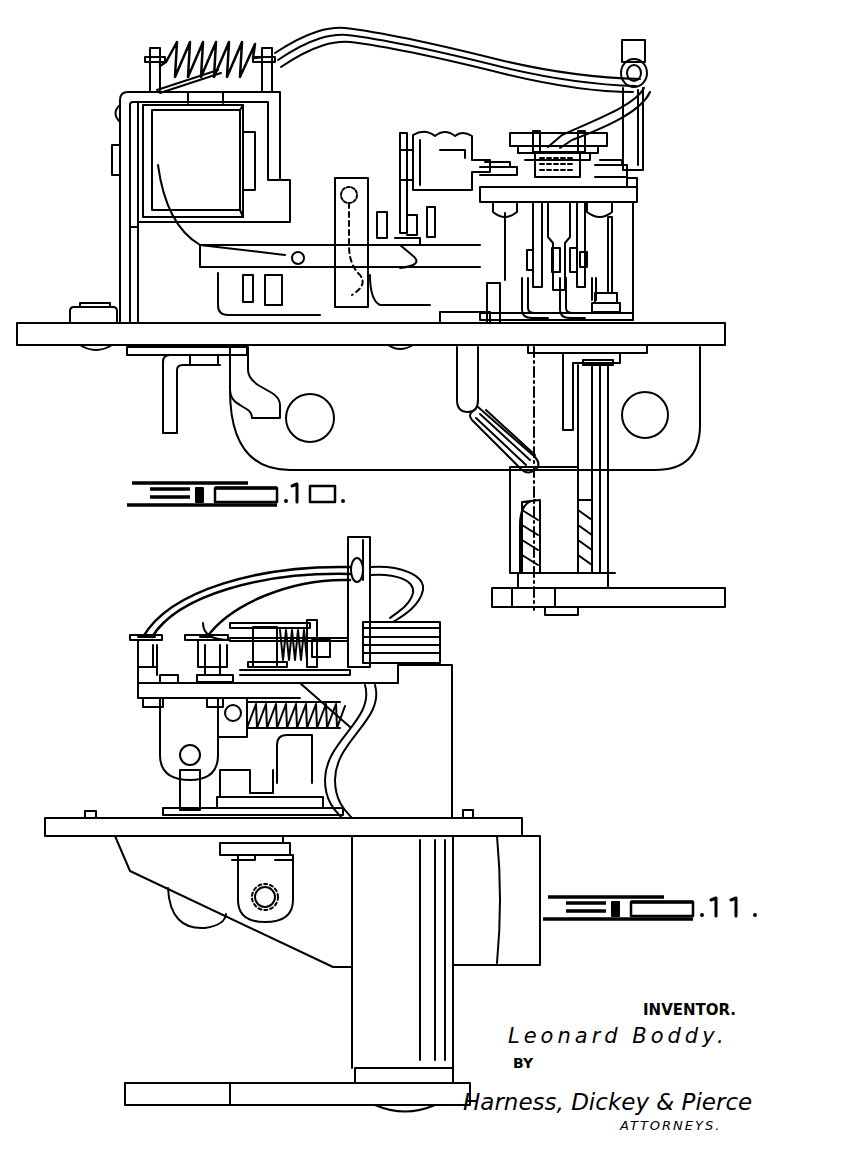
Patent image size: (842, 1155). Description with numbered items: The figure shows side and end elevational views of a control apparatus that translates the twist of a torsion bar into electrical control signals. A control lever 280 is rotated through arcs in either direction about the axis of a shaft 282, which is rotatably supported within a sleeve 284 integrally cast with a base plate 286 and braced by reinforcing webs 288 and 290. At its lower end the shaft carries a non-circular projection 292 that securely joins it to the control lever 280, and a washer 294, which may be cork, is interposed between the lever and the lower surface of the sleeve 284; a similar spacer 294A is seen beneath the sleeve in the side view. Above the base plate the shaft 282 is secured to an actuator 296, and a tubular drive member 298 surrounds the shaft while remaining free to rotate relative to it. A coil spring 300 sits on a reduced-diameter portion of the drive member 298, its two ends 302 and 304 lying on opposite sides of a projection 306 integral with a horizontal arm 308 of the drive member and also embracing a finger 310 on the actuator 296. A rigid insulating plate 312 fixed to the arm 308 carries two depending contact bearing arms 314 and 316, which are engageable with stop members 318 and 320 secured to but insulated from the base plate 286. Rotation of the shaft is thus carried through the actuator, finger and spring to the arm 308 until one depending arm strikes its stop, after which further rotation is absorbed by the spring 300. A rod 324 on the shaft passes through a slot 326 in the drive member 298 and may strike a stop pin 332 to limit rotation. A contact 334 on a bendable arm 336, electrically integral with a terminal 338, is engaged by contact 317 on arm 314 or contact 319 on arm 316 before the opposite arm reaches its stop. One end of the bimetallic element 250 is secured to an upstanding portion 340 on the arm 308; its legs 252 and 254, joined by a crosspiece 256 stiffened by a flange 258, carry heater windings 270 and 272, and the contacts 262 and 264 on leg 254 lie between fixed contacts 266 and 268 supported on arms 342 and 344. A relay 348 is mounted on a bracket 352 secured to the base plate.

In FIG. 10, the relay / bimetallic element 250 is at (400, 178).
In FIG. 11, the relay / bimetallic element 250 is at (320, 745).
In FIG. 10, the leg portion 252 is at (404, 133).
In FIG. 11, the leg portion 252 is at (275, 640).
In FIG. 10, the leg portion 254 is at (400, 250).
In FIG. 11, the leg portion 254 is at (345, 722).
In FIG. 10, the crosspiece 256 is at (400, 188).
In FIG. 10, the flange 258 is at (410, 198).
In FIG. 10, the contact 262 is at (425, 240).
In FIG. 10, the contact 264 is at (385, 222).
In FIG. 10, the electrical contact 266 is at (420, 222).
In FIG. 10, the electrical contact 268 is at (395, 215).
In FIG. 11, the winding 270 is at (285, 635).
In FIG. 11, the heater winding 272 is at (275, 778).
In FIG. 10, the control lever 280 is at (685, 598).
In FIG. 11, the control lever 280 is at (205, 1090).
In FIG. 10, the shaft 282 is at (565, 530).
In FIG. 10, the sleeve 284 is at (595, 492).
In FIG. 11, the sleeve 284 is at (370, 990).
In FIG. 10, the base plate 286 is at (712, 325).
In FIG. 11, the base plate 286 is at (505, 818).
In FIG. 10, the reinforcing web 288 is at (525, 388).
In FIG. 11, the reinforcing web 290 is at (497, 970).
In FIG. 10, the non-circular projection 292 is at (565, 617).
In FIG. 11, the washer 294 is at (365, 1077).
In FIG. 10, the spacer block 294A is at (600, 578).
In FIG. 10, the actuator 296 is at (607, 140).
In FIG. 11, the actuator 296 is at (410, 630).
In FIG. 10, the tubular drive member 298 is at (678, 261).
In FIG. 11, the tubular drive member 298 is at (455, 753).
In FIG. 11, the coil spring 300 is at (440, 648).
In FIG. 10, the spring end 302 is at (545, 140).
In FIG. 10, the spring end 304 is at (600, 133).
In FIG. 11, the spring end 304 is at (312, 622).
In FIG. 10, the projection 306 is at (557, 164).
In FIG. 11, the projection 306 is at (322, 645).
In FIG. 10, the arm 308 is at (638, 196).
In FIG. 11, the arm 308 is at (398, 692).
In FIG. 10, the finger 310 is at (550, 135).
In FIG. 11, the finger 310 is at (300, 638).
In FIG. 10, the insulating plate 312 is at (612, 210).
In FIG. 11, the insulating plate 312 is at (140, 690).
In FIG. 10, the contact bearing arm 314 is at (505, 225).
In FIG. 10, the contact bearing arm 316 is at (585, 225).
In FIG. 11, the contact bearing arm 316 is at (170, 728).
In FIG. 10, the contact 317 is at (560, 240).
In FIG. 10, the stop member 318 is at (563, 320).
In FIG. 10, the contact 319 is at (600, 275).
In FIG. 10, the stop member 320 is at (610, 300).
In FIG. 11, the stop member 320 is at (180, 797).
In FIG. 10, the rod 324 is at (487, 296).
In FIG. 10, the slot 326 is at (525, 320).
In FIG. 10, the stop pin 332 is at (478, 320).
In FIG. 10, the contact 334 is at (578, 260).
In FIG. 10, the arm 336 is at (592, 320).
In FIG. 11, the arm 336 is at (265, 758).
In FIG. 10, the terminal 338 is at (575, 385).
In FIG. 11, the terminal 338 is at (280, 890).
In FIG. 10, the upstanding portion 340 is at (430, 135).
In FIG. 10, the arm 342 is at (430, 300).
In FIG. 11, the arm 342 is at (225, 837).
In FIG. 10, the arm 344 is at (280, 302).
In FIG. 10, the relay 348 is at (205, 146).
In FIG. 10, the bracket 352 is at (118, 248).